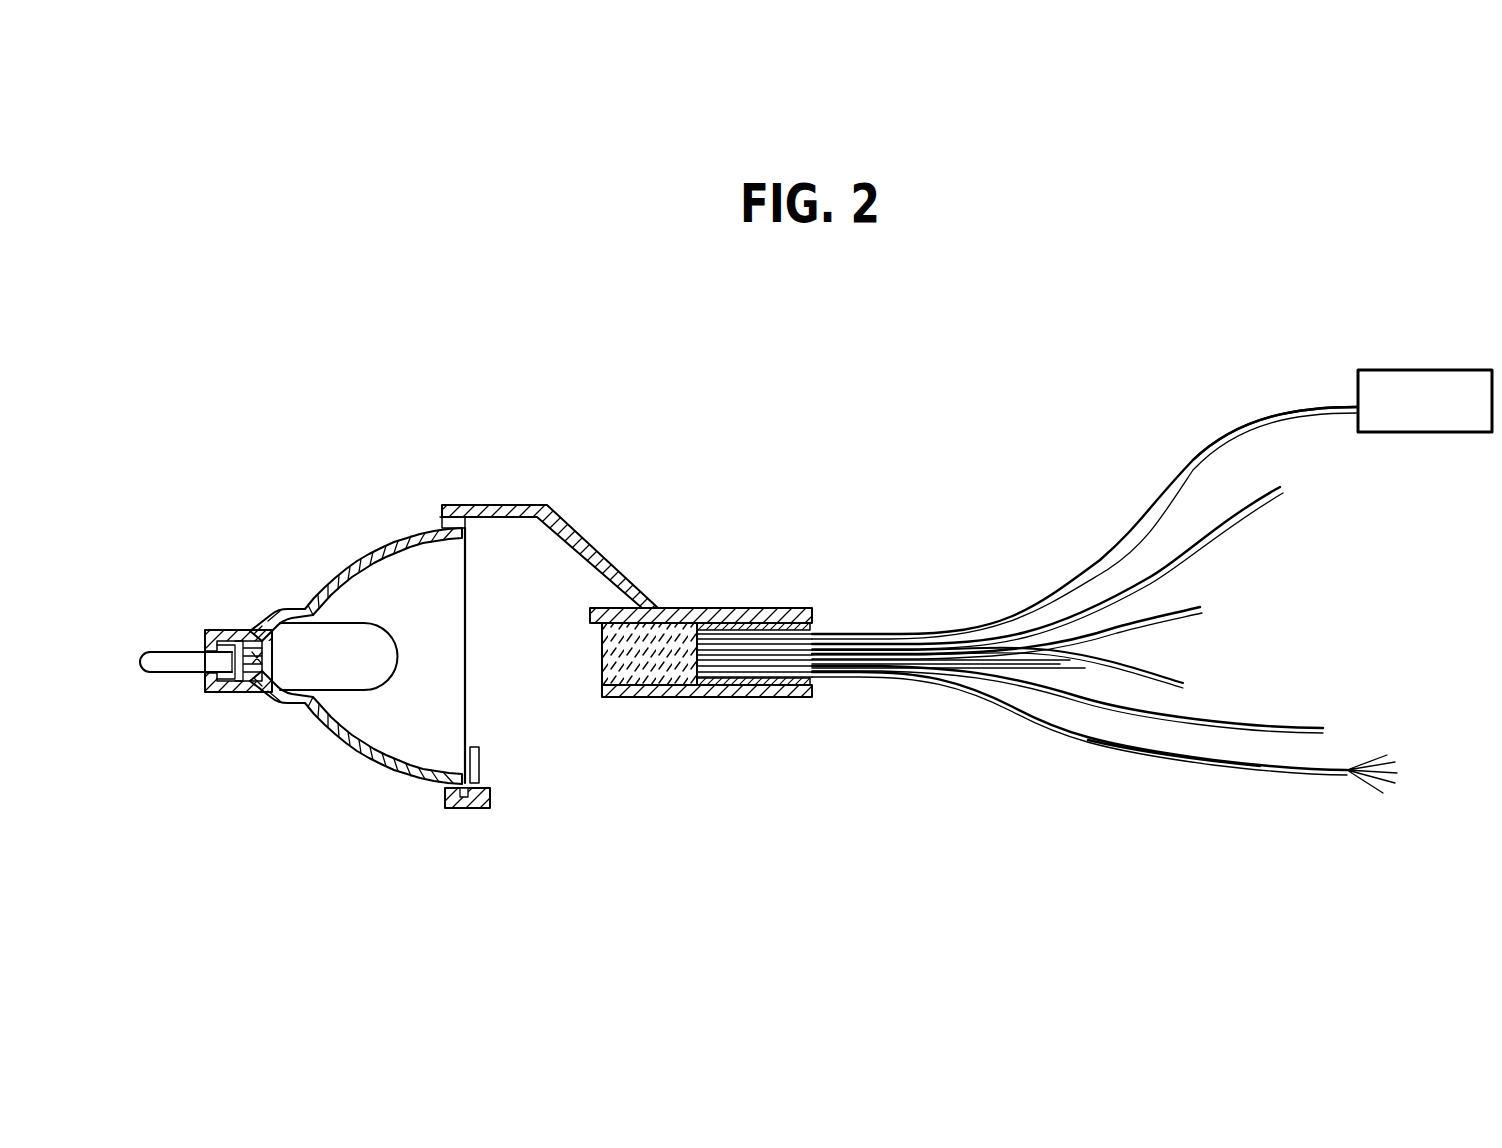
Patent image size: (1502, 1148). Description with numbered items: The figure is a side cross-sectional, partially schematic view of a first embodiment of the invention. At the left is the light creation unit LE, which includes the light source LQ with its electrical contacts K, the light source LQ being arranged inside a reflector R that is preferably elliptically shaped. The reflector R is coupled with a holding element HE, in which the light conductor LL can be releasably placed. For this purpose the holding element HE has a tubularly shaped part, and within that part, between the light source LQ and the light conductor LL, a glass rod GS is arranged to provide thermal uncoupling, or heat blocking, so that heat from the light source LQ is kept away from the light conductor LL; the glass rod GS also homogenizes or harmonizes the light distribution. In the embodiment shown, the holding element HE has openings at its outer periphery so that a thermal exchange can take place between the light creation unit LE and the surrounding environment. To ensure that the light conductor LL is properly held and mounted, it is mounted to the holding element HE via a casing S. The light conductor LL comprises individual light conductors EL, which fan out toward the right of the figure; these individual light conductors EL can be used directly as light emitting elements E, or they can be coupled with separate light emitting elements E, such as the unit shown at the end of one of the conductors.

The electrical contacts K is at (178, 651).
The light creation unit LE is at (368, 503).
The light source LQ is at (333, 676).
The reflector R is at (370, 750).
The holding element HE is at (492, 508).
The glass rod GS is at (655, 637).
The casing S is at (782, 620).
The light conductor LL is at (887, 650).
The individual light conductors EL is at (1193, 458).
The light emitting elements E is at (1400, 385).